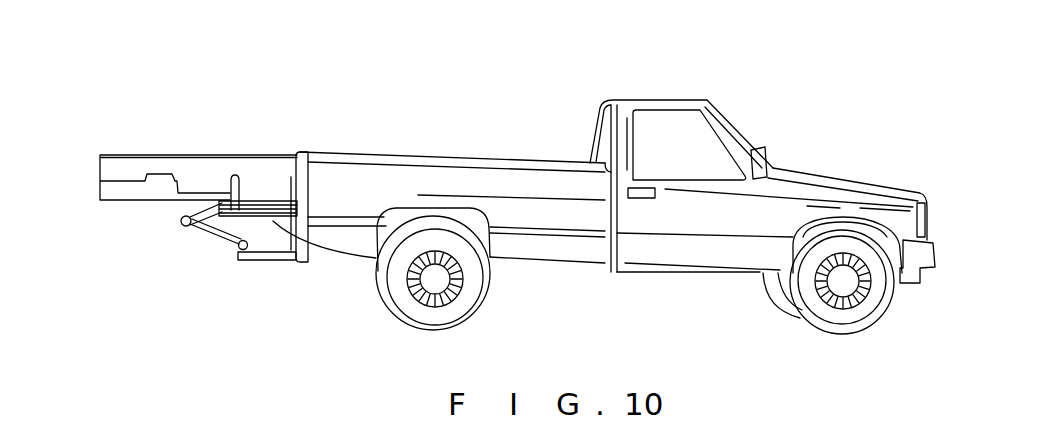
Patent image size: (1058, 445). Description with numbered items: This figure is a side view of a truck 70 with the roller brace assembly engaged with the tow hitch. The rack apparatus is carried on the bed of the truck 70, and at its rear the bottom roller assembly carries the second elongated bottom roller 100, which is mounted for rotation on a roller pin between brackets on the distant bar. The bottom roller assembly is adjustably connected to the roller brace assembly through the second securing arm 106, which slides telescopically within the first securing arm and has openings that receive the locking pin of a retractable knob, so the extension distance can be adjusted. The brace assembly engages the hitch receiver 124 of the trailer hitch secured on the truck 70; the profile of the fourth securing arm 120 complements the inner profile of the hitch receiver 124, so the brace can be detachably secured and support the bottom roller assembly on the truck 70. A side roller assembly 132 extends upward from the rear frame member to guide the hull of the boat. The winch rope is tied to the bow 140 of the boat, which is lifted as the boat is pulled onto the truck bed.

The truck 70 is at (543, 264).
The second elongated bottom roller 100 is at (182, 224).
The second securing arm 106 is at (215, 236).
The fourth securing arm 120 is at (268, 263).
The hitch receiver 124 is at (303, 264).
The side roller assembly 132 is at (235, 175).
The bow 140 is at (125, 153).